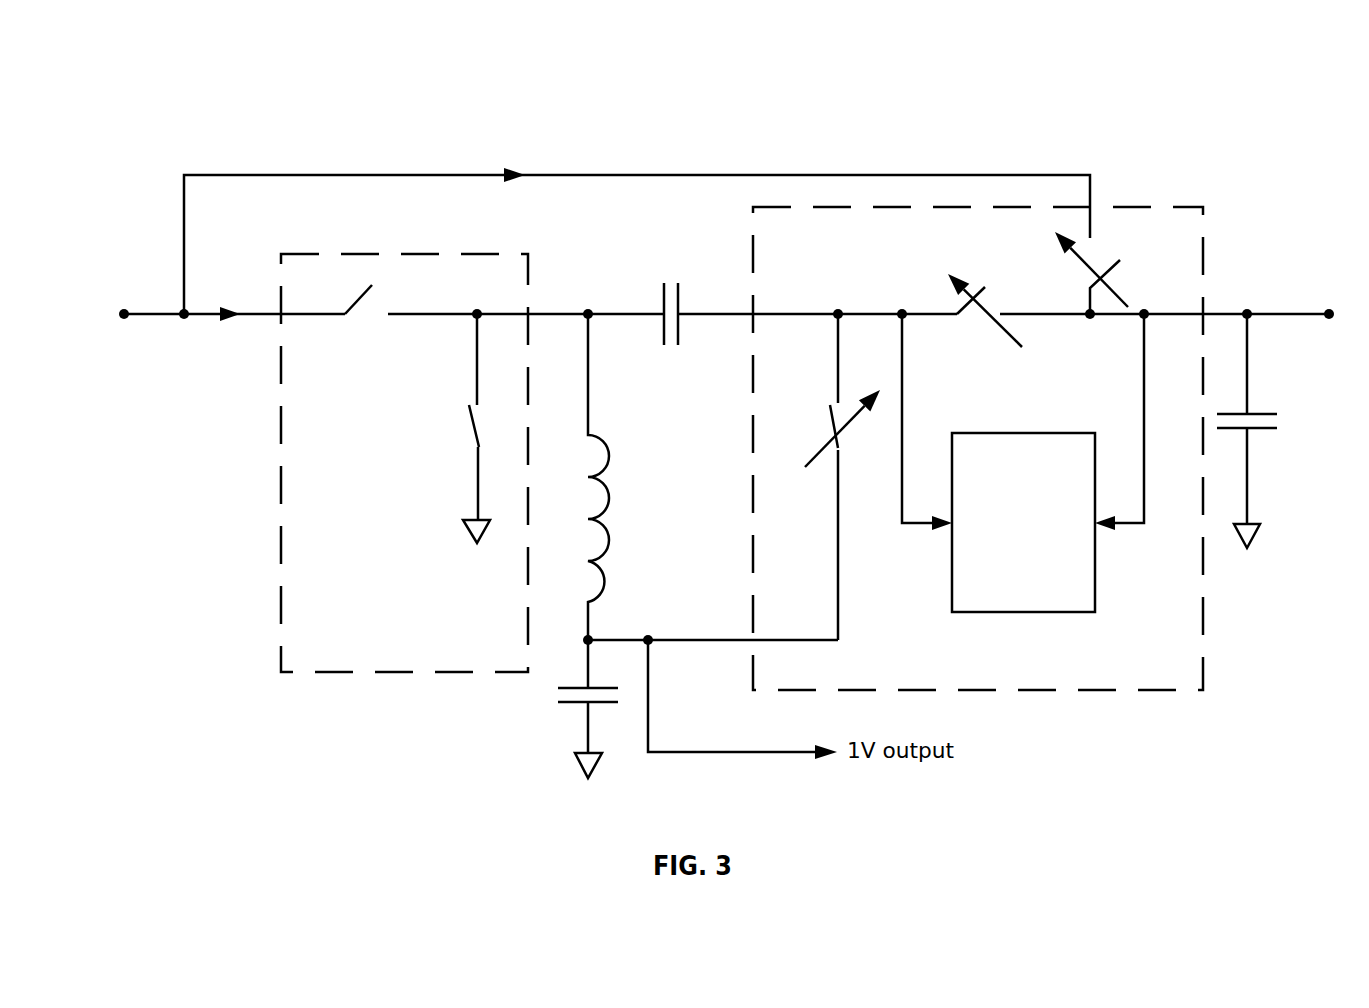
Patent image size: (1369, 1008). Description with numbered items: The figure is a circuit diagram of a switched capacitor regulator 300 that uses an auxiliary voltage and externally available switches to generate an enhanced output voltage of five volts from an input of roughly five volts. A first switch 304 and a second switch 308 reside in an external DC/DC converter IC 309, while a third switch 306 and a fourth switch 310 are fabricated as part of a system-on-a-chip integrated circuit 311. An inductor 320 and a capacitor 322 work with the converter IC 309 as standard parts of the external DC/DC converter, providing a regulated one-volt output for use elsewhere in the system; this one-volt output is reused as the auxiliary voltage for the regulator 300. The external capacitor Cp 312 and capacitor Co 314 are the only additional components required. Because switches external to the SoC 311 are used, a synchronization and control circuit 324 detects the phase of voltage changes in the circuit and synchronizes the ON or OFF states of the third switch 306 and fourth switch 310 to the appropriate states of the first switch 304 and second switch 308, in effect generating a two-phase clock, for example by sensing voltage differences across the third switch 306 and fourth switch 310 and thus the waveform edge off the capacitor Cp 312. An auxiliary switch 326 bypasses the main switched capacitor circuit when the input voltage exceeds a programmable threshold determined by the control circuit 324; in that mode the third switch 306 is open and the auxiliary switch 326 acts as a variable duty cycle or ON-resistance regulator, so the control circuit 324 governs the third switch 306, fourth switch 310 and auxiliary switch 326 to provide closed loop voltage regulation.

The switched capacitor regulator 300 is at (1195, 111).
The switch SW1 304 is at (350, 316).
The switch SW3 306 is at (960, 306).
The switch SW2 308 is at (473, 422).
The external DC/DC converter IC 309 is at (280, 668).
The switch SW4 310 is at (838, 449).
The system-on-a-chip integrated circuit 311 is at (1178, 692).
The capacitor Cp 312 is at (662, 302).
The capacitor Co 314 is at (1261, 411).
The inductor 320 is at (590, 437).
The capacitor 322 is at (567, 703).
The synchronization and control circuit 324 is at (1029, 613).
The auxiliary switch SW5 326 is at (1088, 300).